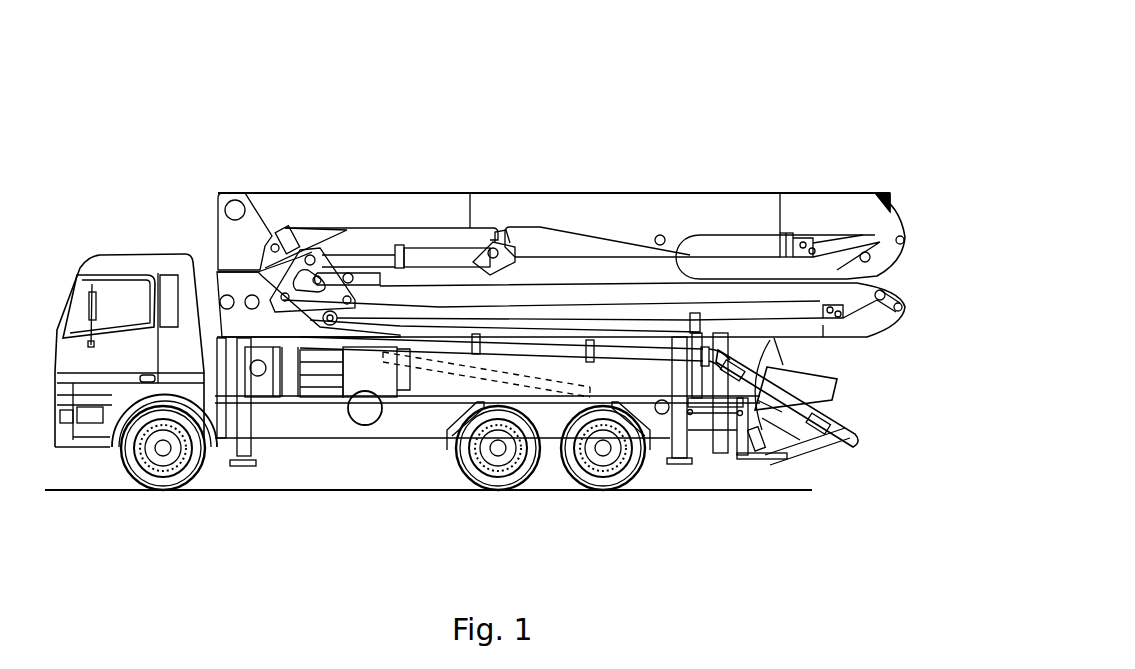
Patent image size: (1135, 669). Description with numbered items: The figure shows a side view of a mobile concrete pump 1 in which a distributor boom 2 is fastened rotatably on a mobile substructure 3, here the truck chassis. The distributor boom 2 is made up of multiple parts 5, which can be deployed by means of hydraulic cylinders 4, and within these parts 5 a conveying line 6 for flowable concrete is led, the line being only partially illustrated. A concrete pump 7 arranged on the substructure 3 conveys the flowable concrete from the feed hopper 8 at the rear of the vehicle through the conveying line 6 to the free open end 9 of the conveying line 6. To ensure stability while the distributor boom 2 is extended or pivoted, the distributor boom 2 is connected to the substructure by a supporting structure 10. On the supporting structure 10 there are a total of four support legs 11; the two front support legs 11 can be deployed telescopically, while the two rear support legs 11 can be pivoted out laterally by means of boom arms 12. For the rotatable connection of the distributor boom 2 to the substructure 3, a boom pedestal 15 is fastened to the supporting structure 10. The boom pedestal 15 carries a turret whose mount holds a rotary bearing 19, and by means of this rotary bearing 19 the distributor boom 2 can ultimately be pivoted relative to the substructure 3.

The mobile concrete pump 1 is at (884, 158).
The distributor boom 2 is at (773, 172).
The mobile substructure 3 is at (395, 462).
The hydraulic cylinders 4 is at (305, 232).
The parts 5 is at (652, 295).
The conveying line 6 is at (437, 355).
The concrete pump 7 is at (725, 445).
The feed hopper 8 is at (825, 382).
The free open end 9 is at (330, 326).
The supporting structure 10 is at (273, 402).
The support legs 11 is at (220, 440).
The boom arms 12 is at (597, 372).
The boom pedestal 15 is at (222, 284).
The rotary bearing 19 is at (233, 270).